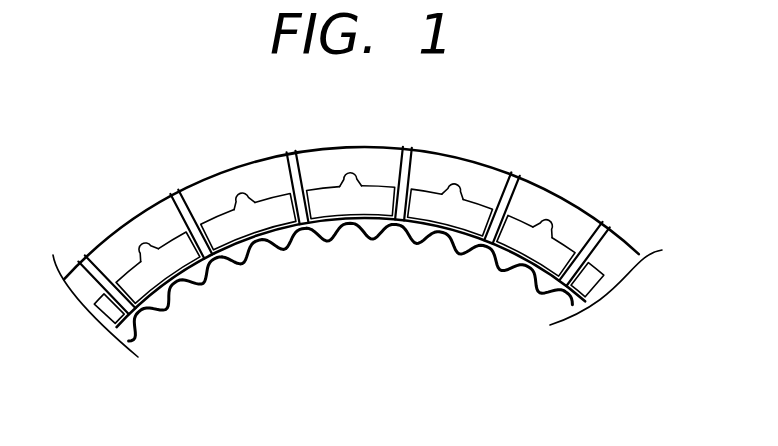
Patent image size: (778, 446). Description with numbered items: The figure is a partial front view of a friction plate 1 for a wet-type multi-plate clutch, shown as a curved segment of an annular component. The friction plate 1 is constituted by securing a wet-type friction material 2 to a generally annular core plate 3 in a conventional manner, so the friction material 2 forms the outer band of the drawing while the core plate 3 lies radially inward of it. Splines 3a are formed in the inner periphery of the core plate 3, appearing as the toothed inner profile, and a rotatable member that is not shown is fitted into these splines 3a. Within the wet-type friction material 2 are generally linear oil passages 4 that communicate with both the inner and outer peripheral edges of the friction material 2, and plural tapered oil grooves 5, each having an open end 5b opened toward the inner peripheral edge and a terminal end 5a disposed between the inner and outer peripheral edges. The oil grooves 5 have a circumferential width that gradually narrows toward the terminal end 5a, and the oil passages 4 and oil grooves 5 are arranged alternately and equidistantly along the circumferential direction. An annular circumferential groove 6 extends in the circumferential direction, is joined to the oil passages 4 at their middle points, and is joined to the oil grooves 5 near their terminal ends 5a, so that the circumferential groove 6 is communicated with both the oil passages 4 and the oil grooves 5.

The friction plate 1 is at (565, 143).
The wet-type friction material 2 is at (262, 172).
The core plate 3 is at (475, 262).
The splines 3a is at (279, 262).
The oil passages 4 is at (176, 206).
The oil grooves 5 is at (120, 320).
The terminal end 5a is at (145, 246).
The open end 5b is at (192, 287).
The circumferential groove 6 is at (568, 250).